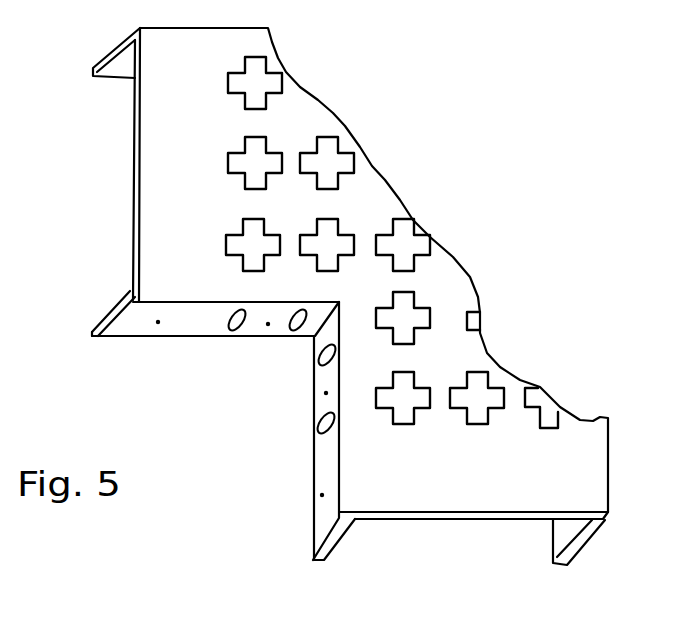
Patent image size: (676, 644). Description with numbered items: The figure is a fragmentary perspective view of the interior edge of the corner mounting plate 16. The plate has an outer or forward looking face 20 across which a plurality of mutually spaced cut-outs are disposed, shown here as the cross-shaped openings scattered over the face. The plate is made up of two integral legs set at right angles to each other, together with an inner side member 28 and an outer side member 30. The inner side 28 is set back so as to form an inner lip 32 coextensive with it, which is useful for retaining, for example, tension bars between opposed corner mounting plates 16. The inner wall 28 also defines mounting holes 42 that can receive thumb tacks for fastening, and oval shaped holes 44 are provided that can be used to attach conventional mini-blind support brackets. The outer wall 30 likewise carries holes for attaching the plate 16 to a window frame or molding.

The corner mounting plate 16 is at (440, 120).
The outer face 20 is at (157, 152).
The inner side member 28 is at (96, 318).
The outer side member 30 is at (113, 50).
The inner lip 32 is at (131, 297).
The mounting holes 42 is at (157, 324).
The oval shaped holes 44 is at (327, 365).